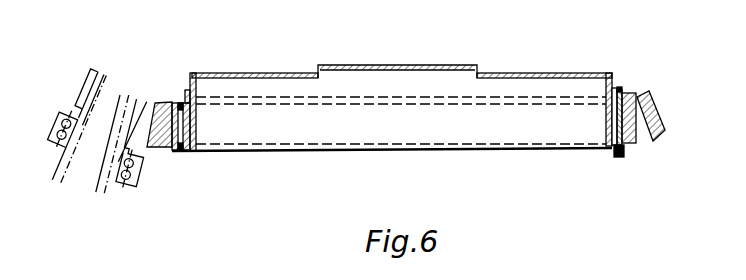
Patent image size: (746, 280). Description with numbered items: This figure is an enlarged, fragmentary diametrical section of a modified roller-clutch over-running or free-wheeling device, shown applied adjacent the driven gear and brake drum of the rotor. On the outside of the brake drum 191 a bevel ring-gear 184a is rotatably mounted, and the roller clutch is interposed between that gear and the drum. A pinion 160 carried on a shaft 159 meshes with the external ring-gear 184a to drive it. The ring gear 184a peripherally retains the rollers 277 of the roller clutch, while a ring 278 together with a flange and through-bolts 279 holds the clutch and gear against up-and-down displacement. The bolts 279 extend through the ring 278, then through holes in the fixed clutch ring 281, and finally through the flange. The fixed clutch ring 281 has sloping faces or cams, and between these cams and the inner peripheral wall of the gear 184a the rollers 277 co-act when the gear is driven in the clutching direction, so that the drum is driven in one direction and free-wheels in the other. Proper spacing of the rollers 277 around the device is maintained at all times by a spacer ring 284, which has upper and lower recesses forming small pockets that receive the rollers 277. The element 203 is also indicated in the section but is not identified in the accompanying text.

The brake drum 191 is at (540, 72).
The fixed clutch ring 281 is at (613, 118).
The rollers 277 is at (174, 103).
The spacer ring 284 is at (193, 128).
The pinion 160 is at (101, 82).
The shaft 159 is at (97, 200).
The through-bolts 279 is at (622, 90).
The ring 278 is at (638, 93).
The bevel ring-gear 184a is at (644, 127).
The bolt 203 is at (632, 146).